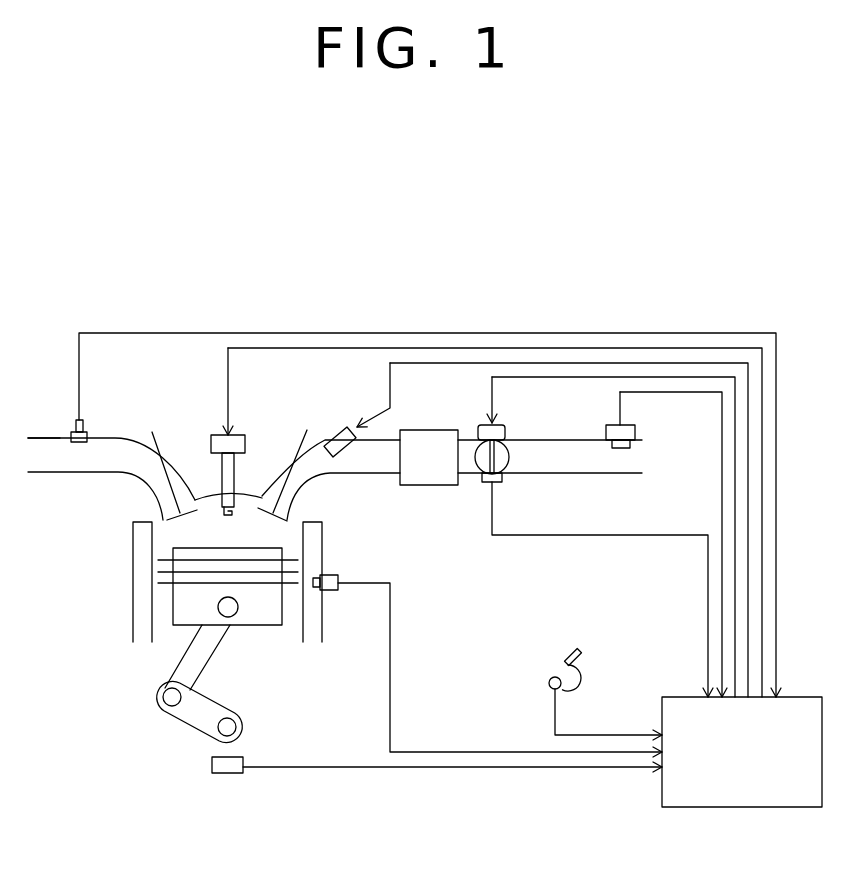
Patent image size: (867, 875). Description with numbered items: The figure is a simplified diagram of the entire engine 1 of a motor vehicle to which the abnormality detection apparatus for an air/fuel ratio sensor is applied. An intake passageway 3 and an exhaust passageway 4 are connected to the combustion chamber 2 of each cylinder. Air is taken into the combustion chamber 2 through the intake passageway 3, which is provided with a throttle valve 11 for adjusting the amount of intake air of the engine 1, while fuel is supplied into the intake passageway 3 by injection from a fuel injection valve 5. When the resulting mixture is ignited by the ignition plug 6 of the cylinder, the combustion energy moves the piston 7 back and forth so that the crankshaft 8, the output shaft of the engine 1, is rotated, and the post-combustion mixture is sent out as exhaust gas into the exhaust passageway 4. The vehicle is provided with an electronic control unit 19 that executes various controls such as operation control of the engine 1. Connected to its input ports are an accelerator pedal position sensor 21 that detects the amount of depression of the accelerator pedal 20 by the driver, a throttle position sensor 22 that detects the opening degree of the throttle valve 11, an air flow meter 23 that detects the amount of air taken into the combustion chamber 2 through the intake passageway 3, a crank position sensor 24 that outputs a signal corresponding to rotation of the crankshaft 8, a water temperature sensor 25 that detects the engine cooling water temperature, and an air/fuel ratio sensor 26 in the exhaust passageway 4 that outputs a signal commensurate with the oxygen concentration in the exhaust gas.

The engine 1 is at (173, 421).
The combustion chamber 2 is at (160, 507).
The intake passageway 3 is at (536, 440).
The exhaust passageway 4 is at (41, 442).
The fuel injection valve 5 is at (345, 425).
The ignition plug 6 is at (237, 486).
The piston 7 is at (252, 618).
The crankshaft 8 is at (238, 722).
The throttle valve 11 is at (508, 455).
The electronic control unit 19 is at (670, 697).
The accelerator pedal 20 is at (568, 650).
The accelerator pedal position sensor 21 is at (548, 684).
The throttle position sensor 22 is at (500, 482).
The air flow meter 23 is at (605, 431).
The crank position sensor 24 is at (212, 765).
The water temperature sensor 25 is at (340, 581).
The air/fuel ratio sensor 26 is at (84, 427).